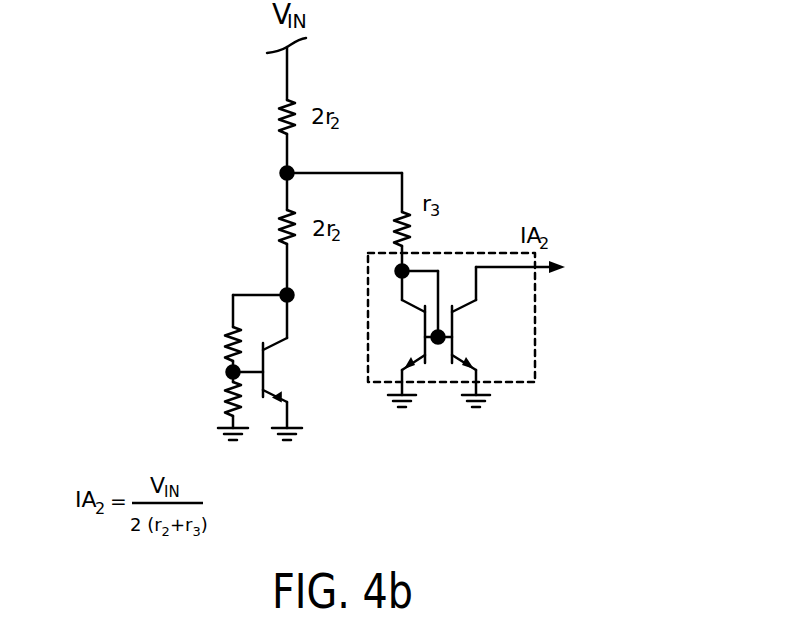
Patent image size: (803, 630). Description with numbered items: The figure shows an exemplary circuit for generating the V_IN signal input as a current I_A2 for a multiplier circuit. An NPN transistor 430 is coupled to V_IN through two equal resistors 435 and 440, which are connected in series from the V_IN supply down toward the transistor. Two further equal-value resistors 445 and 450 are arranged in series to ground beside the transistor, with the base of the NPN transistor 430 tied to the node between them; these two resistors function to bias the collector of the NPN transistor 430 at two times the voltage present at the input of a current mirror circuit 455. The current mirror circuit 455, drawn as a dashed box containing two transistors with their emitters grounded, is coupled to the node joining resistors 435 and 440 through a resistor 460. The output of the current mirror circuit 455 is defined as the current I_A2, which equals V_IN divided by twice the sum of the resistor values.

The NPN transistor 430 is at (273, 372).
The resistor 435 is at (347, 108).
The resistor 440 is at (282, 222).
The resistor 445 is at (230, 332).
The resistor 450 is at (230, 390).
The current mirror circuit 455 is at (537, 368).
The resistor 460 is at (443, 202).